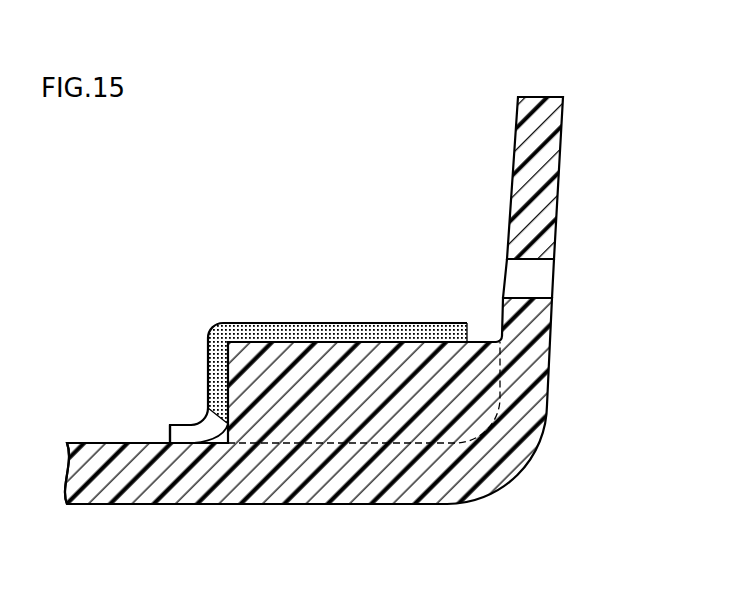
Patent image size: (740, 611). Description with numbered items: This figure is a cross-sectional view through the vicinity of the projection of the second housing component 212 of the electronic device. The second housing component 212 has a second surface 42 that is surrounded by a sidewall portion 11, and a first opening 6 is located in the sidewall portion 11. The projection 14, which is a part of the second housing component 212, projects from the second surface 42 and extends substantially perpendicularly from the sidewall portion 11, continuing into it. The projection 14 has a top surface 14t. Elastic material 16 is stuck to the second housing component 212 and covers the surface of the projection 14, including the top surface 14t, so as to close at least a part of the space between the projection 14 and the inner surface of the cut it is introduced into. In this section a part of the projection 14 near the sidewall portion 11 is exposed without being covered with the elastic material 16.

The sidewall portion 11 is at (548, 139).
The first opening 6 is at (537, 282).
The elastic material 16 is at (287, 337).
The top surface 14t is at (347, 341).
The projection 14 is at (394, 372).
The second surface 42 is at (114, 441).
The second housing component 212 is at (200, 488).